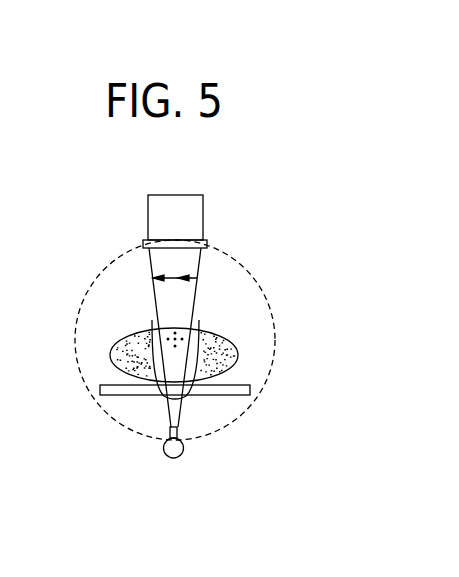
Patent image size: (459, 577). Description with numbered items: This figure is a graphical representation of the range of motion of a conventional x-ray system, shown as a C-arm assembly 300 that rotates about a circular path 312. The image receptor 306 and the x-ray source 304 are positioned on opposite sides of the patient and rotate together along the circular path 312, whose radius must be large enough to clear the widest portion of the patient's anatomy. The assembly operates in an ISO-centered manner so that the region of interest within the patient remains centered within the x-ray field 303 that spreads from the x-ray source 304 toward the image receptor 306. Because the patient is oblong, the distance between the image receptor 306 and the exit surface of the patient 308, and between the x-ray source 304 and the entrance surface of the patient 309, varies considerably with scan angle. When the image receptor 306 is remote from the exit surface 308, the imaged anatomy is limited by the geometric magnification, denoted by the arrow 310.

The C-arm assembly 300 is at (95, 240).
The x-ray field 303 is at (199, 355).
The x-ray source 304 is at (175, 458).
The image receptor 306 is at (188, 218).
The exit surface of the patient 308 is at (152, 320).
The entrance surface of the patient 309 is at (183, 400).
The arrow denoting geometric magnification 310 is at (197, 277).
The circular path 312 is at (278, 356).